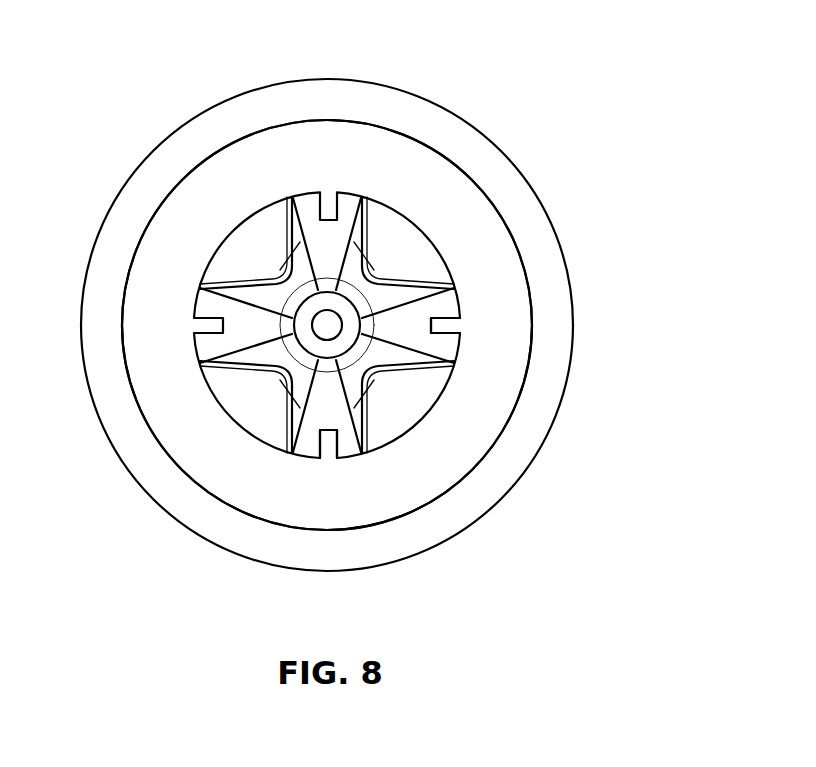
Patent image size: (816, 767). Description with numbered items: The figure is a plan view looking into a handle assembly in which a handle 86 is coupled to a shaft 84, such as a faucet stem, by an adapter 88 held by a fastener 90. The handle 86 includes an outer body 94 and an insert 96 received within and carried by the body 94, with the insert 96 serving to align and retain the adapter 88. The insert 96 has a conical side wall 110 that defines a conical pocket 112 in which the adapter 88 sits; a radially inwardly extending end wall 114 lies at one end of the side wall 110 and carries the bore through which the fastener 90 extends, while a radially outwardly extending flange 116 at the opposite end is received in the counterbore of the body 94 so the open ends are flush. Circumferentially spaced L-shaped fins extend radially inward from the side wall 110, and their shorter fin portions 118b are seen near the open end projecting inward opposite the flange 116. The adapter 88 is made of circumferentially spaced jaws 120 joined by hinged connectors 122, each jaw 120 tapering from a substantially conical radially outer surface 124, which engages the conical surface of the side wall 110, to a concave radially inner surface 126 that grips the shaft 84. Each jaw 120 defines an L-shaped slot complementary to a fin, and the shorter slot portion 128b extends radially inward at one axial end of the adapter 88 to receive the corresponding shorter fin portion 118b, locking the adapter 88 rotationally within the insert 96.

The shaft 84 is at (364, 420).
The handle 86 is at (568, 190).
The adapter 88 is at (383, 422).
The fastener 90 is at (328, 325).
The body 94 is at (243, 118).
The insert 96 is at (209, 195).
The conical side wall 110 is at (405, 238).
The conical pocket 112 is at (385, 222).
The end wall 114 is at (297, 367).
The flange 116 is at (493, 278).
The shorter fin portion 118b is at (442, 326).
The jaw 120 is at (323, 415).
The hinged connector 122 is at (243, 273).
The radially outer surface 124 is at (383, 422).
The radially inner surface 126 is at (203, 363).
The shorter slot portion 128b is at (457, 358).